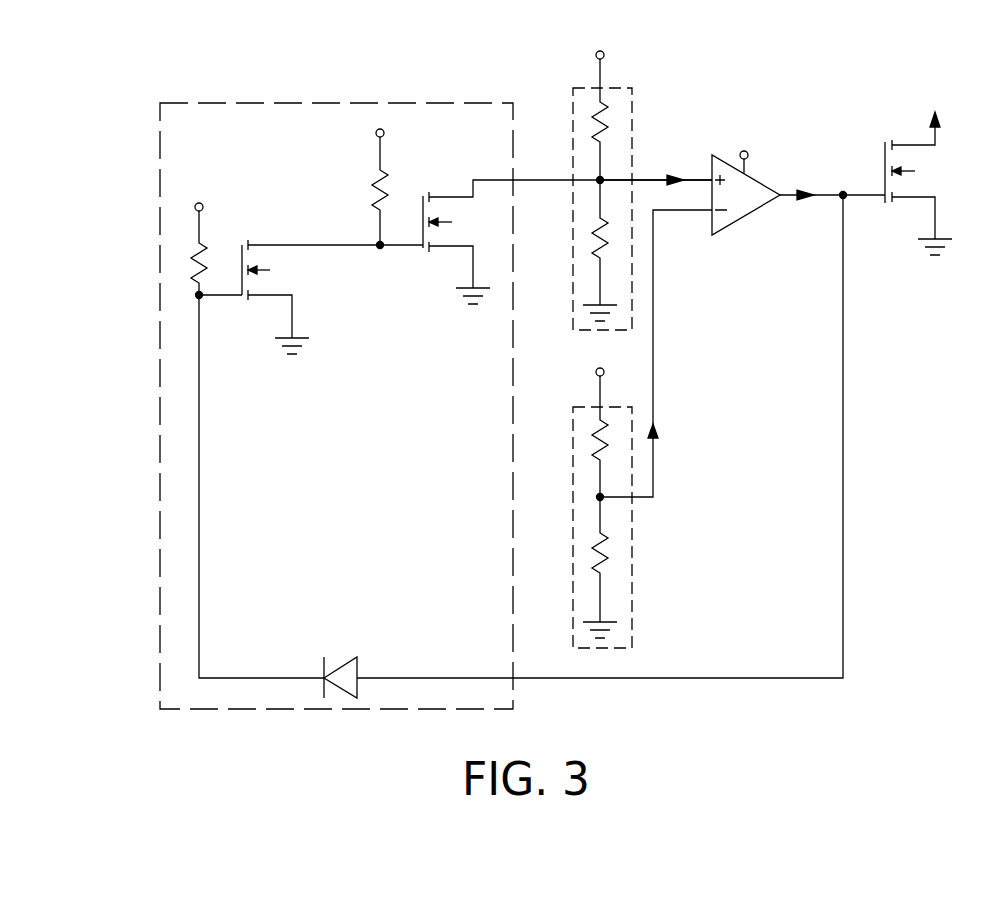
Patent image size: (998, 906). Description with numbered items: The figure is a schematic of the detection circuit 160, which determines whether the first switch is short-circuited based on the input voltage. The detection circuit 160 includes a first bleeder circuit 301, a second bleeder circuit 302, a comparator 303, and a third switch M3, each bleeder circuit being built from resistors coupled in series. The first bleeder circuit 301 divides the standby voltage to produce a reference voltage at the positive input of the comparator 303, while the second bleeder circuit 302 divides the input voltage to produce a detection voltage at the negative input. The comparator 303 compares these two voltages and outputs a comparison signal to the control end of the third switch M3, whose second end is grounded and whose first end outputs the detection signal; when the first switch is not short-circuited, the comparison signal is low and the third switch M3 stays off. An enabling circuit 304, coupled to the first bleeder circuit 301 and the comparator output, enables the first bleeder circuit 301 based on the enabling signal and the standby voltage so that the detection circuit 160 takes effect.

The detection circuit 160 is at (140, 46).
The first bleeder circuit 301 is at (632, 113).
The second bleeder circuit 302 is at (632, 476).
The comparator 303 is at (758, 205).
The enabling circuit 304 is at (428, 102).
The third switch M3 is at (923, 171).